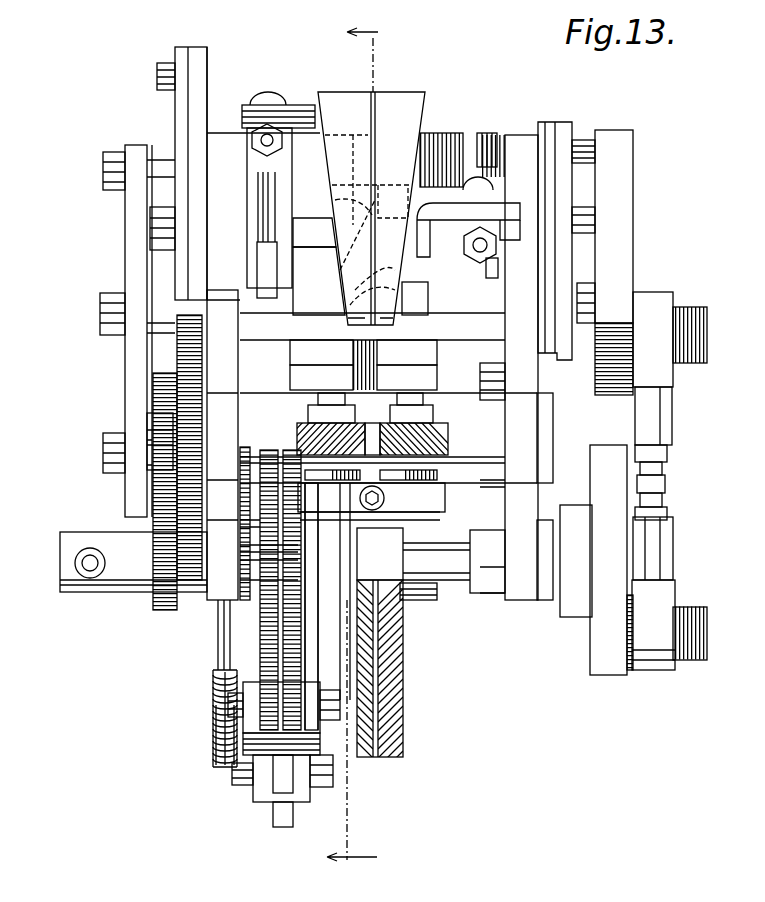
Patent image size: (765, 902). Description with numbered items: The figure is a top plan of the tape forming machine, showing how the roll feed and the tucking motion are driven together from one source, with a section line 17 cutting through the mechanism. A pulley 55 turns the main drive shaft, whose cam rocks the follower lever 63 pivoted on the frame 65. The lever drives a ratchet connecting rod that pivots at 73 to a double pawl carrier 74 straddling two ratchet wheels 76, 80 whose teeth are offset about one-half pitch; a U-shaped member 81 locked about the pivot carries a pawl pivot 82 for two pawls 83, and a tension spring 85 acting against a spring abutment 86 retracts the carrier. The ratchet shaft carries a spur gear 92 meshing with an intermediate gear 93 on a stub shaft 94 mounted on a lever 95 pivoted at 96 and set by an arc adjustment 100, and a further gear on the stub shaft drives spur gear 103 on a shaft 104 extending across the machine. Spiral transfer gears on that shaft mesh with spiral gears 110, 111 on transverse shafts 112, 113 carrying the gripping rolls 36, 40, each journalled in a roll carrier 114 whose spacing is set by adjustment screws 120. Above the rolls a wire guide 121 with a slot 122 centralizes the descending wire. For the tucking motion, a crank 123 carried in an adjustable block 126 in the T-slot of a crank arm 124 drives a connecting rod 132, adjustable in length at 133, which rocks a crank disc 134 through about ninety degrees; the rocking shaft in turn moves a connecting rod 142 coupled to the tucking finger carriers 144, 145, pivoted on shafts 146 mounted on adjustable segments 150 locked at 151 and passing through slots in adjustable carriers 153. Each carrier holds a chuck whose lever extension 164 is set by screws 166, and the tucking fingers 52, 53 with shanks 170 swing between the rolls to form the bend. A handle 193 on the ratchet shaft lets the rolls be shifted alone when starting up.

The section line 17- 17 is at (356, 447).
The gripping roll 36 is at (319, 281).
The gripping roll 40 is at (415, 298).
The tucking finger 52 is at (361, 296).
The tucking finger 53 is at (314, 232).
The pulley 55 is at (404, 648).
The follower lever 63 is at (284, 827).
The frame 65 is at (207, 300).
The pivot 73 is at (233, 778).
The pawl carrier 74 is at (257, 650).
The ratchet wheel 76 is at (265, 452).
The ratchet wheel 80 is at (292, 452).
The U-shaped member 81 is at (213, 735).
The pawl pivot 82 is at (213, 690).
The pawl 83 is at (260, 697).
The tension spring 85 is at (213, 714).
The spring abutment 86 is at (218, 644).
The spur gear 92 is at (162, 610).
The intermediate gear 93 is at (152, 470).
The stub shaft 94 is at (103, 442).
The lever 95 is at (125, 236).
The pivot 96 is at (103, 162).
The arc adjustment 100 is at (100, 304).
The spur gear 103 is at (177, 352).
The shaft 104 is at (553, 438).
The spiral gear 110 is at (300, 420).
The spiral gear 111 is at (450, 437).
The shaft 112 is at (321, 377).
The shaft 113 is at (407, 377).
The roll carrier 114 is at (363, 352).
The adjustment screw 120 is at (492, 133).
The wire guide 121 is at (350, 107).
The slot 122 is at (405, 147).
The crank 123 is at (707, 625).
The crank arm 124 is at (613, 530).
The adjustable block 126 is at (630, 675).
The connecting rod 132 is at (675, 400).
The length adjustment 133 is at (672, 480).
The crank disc 134 is at (623, 178).
The connecting rod 142 is at (257, 275).
The tucking finger carrier 144 is at (498, 268).
The tucking finger carrier 145 is at (258, 228).
The shaft 146 is at (150, 222).
The adjustable segment 150 is at (175, 109).
The lock 151 is at (157, 77).
The adjustable carrier 153 is at (207, 82).
The extension 164 is at (300, 105).
The adjustment screw 166 is at (255, 130).
The tucking finger shank 170 is at (376, 123).
The handle 193 is at (73, 585).